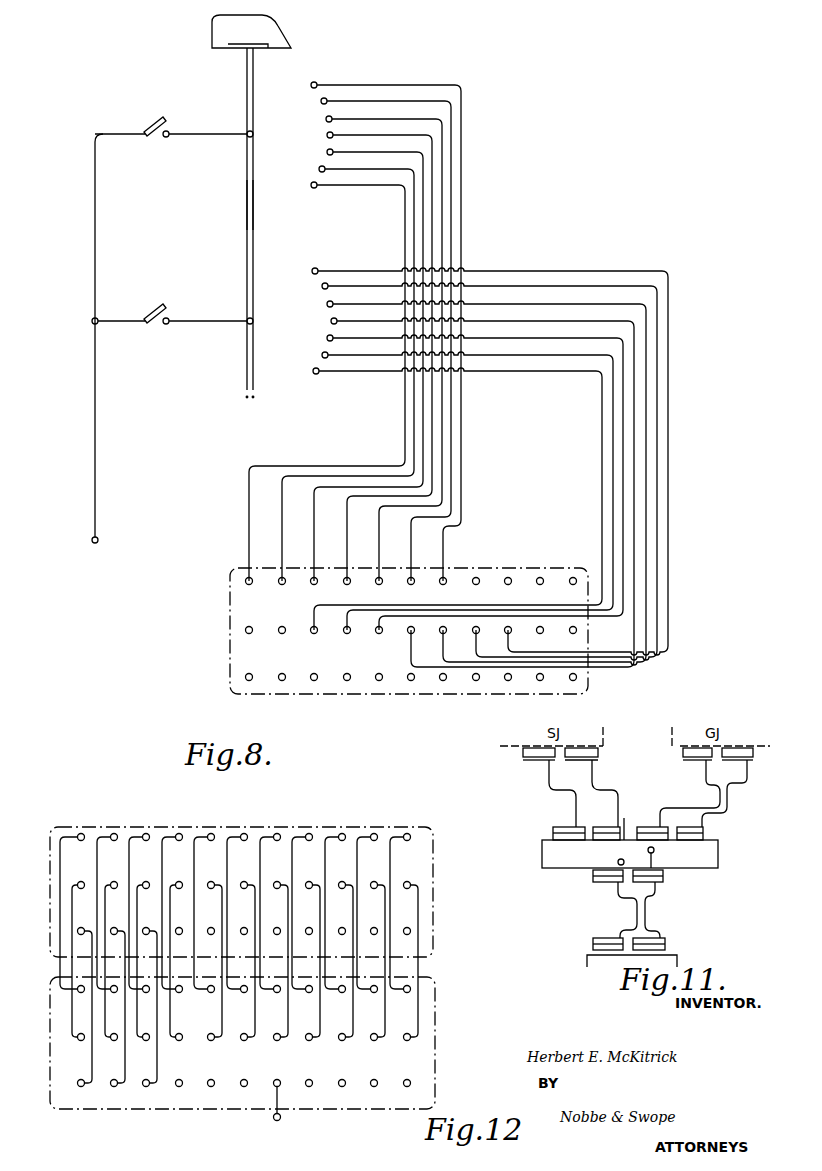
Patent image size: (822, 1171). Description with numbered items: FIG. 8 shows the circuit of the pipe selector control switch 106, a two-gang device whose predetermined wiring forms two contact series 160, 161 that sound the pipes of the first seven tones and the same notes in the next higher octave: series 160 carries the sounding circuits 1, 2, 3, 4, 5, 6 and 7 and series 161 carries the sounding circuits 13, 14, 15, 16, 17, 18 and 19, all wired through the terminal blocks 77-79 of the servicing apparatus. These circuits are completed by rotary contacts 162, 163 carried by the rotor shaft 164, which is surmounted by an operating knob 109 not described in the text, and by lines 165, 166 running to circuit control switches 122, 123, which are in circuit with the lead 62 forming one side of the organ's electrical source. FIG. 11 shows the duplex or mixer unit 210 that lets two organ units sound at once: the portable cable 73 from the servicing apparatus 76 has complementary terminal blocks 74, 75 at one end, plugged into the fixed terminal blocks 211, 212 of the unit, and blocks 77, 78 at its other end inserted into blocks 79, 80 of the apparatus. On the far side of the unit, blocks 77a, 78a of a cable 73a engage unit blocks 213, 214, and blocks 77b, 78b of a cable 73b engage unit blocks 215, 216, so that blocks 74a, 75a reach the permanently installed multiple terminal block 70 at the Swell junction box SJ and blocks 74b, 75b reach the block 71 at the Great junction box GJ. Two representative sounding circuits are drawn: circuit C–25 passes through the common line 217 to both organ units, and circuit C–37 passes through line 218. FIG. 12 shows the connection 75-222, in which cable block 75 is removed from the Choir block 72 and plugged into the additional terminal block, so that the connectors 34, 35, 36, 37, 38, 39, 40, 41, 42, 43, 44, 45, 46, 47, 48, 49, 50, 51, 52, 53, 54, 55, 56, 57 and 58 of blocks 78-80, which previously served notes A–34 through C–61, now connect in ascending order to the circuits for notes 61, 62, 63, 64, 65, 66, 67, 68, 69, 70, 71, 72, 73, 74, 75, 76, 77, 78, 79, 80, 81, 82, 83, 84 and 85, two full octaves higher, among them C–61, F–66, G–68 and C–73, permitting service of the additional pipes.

In FIG. 8, the knob 109 is at (222, 32).
In FIG. 8, the pipe selector control switch 106 is at (224, 109).
In FIG. 8, the rotor shaft 164 is at (247, 197).
In FIG. 8, the circuit control switch 122 is at (132, 117).
In FIG. 8, the circuit control switch 123 is at (133, 300).
In FIG. 8, the line 165 is at (197, 137).
In FIG. 8, the line 166 is at (200, 323).
In FIG. 8, the lead 62 is at (97, 246).
In FIG. 12, the lead 62 is at (193, 977).
In FIG. 8, the rotary contact 162 is at (300, 72).
In FIG. 8, the rotary contact 163 is at (300, 258).
In FIG. 8, the contact series 160 is at (303, 161).
In FIG. 8, the contact series 161 is at (303, 337).
In FIG. 8, the sounding circuit for note C– 1 is at (326, 385).
In FIG. 8, the sounding circuit for note C#– 2 is at (346, 377).
In FIG. 8, the sounding circuit for note D– 3 is at (366, 369).
In FIG. 8, the sounding circuit for note D#– 4 is at (379, 360).
In FIG. 8, the sounding circuit for note E– 5 is at (384, 352).
In FIG. 8, the sounding circuit for note F– 6 is at (386, 343).
In FIG. 8, the sounding circuit for note F#– 7 is at (386, 336).
In FIG. 8, the sounding circuit for note C– 13 is at (602, 478).
In FIG. 8, the sounding circuit for note C#– 14 is at (613, 496).
In FIG. 8, the sounding circuit for note D– 15 is at (623, 514).
In FIG. 8, the sounding circuit for note D#– 16 is at (686, 486).
In FIG. 8, the sounding circuit for note E– 17 is at (686, 508).
In FIG. 8, the sounding circuit for note F– 18 is at (686, 530).
In FIG. 8, the sounding circuit for note F#– 19 is at (686, 554).
In FIG. 8, the terminal blocks 77 and 79 77-79 is at (230, 628).
In FIG. 11, the multiple terminal block 70 is at (525, 752).
In FIG. 12, the multiple terminal block 70 is at (370, 912).
In FIG. 11, the multiple terminal block 71 is at (683, 752).
In FIG. 12, the multiple terminal block 71 is at (403, 912).
In FIG. 11, the terminal block 74a is at (527, 760).
In FIG. 11, the terminal block 75a is at (596, 757).
In FIG. 11, the terminal block 74b is at (690, 760).
In FIG. 11, the terminal block 75b is at (753, 760).
In FIG. 11, the sounding circuit for note C– 37 is at (592, 772).
In FIG. 12, the sounding circuit for note C– 37 is at (179, 1000).
In FIG. 11, the sounding circuit for note C– 25 is at (576, 797).
In FIG. 11, the cable 73a is at (550, 787).
In FIG. 11, the cable 73b is at (743, 787).
In FIG. 11, the terminal block 77a is at (553, 828).
In FIG. 11, the terminal block 78a is at (608, 827).
In FIG. 11, the terminal block 77b is at (666, 824).
In FIG. 11, the terminal block 78b is at (707, 828).
In FIG. 11, the terminal block 213 is at (553, 836).
In FIG. 11, the terminal block 214 is at (624, 822).
In FIG. 11, the terminal block 215 is at (650, 832).
In FIG. 11, the terminal block 216 is at (703, 837).
In FIG. 11, the common line 217 is at (582, 856).
In FIG. 11, the line 218 is at (727, 857).
In FIG. 11, the duplex or mixer unit 210 is at (544, 862).
In FIG. 11, the fixed terminal block 211 is at (594, 872).
In FIG. 11, the fixed terminal block 212 is at (667, 872).
In FIG. 11, the terminal block 74 is at (592, 893).
In FIG. 12, the terminal block 74 is at (146, 960).
In FIG. 11, the terminal block 75 is at (669, 893).
In FIG. 12, the terminal block 75 is at (179, 960).
In FIG. 11, the portable cable 73 is at (630, 904).
In FIG. 12, the portable cable 73 is at (114, 960).
In FIG. 11, the terminal block 77 is at (598, 937).
In FIG. 12, the terminal block 77 is at (245, 960).
In FIG. 11, the terminal block 78 is at (667, 934).
In FIG. 12, the terminal block 78 is at (278, 960).
In FIG. 11, the terminal block 79 is at (593, 946).
In FIG. 12, the terminal block 79 is at (310, 960).
In FIG. 11, the terminal block 80 is at (667, 948).
In FIG. 12, the terminal block 80 is at (343, 960).
In FIG. 11, the servicing apparatus 76 is at (610, 970).
In FIG. 12, the servicing apparatus 76 is at (212, 960).
In FIG. 12, the block 75 plugged into additional terminal block 222 75-222 is at (433, 925).
In FIG. 12, the terminal blocks 78 and 80 78-80 is at (433, 1022).
In FIG. 12, the note circuit C– 61 is at (75, 912).
In FIG. 12, the note circuit D– 63 is at (142, 912).
In FIG. 12, the note circuit D#– 64 is at (175, 912).
In FIG. 12, the note circuit E– 65 is at (207, 912).
In FIG. 12, the note circuit F– 66 is at (240, 912).
In FIG. 12, the note circuit F#– 67 is at (273, 912).
In FIG. 12, the note circuit G– 68 is at (305, 912).
In FIG. 12, the note circuit G#– 69 is at (338, 912).
In FIG. 12, the multiple terminal block 72 is at (81, 960).
In FIG. 12, the note circuit G#– 81 is at (375, 960).
In FIG. 12, the note circuit A– 82 is at (408, 960).
In FIG. 12, the note circuit A#– 83 is at (82, 1006).
In FIG. 12, the note circuit B– 84 is at (115, 1006).
In FIG. 12, the note circuit C– 85 is at (147, 1006).
In FIG. 12, the connector for note A– 34 is at (81, 1000).
In FIG. 12, the connector for note A#– 35 is at (114, 1000).
In FIG. 12, the connector for note B– 36 is at (146, 1000).
In FIG. 12, the connector for note C#– 38 is at (211, 1000).
In FIG. 12, the connector for note D– 39 is at (244, 1000).
In FIG. 12, the connector for note D#– 40 is at (277, 1000).
In FIG. 12, the connector for note E– 41 is at (309, 1000).
In FIG. 12, the connector for note F– 42 is at (342, 1000).
In FIG. 12, the connector for note F#– 43 is at (374, 1000).
In FIG. 12, the connector for note G– 44 is at (407, 1000).
In FIG. 12, the connector for note G#– 45 is at (81, 1048).
In FIG. 12, the connector for note A– 46 is at (114, 1048).
In FIG. 12, the connector for note A#– 47 is at (146, 1048).
In FIG. 12, the connector for note B– 48 is at (179, 1048).
In FIG. 12, the connector for note C– 49 is at (211, 1048).
In FIG. 12, the connector for note C#– 50 is at (244, 1048).
In FIG. 12, the connector for note D– 51 is at (277, 1048).
In FIG. 12, the connector for note D#– 52 is at (309, 1048).
In FIG. 12, the connector for note E– 53 is at (342, 1048).
In FIG. 12, the connector for note F– 54 is at (374, 1048).
In FIG. 12, the connector for note F#– 55 is at (407, 1048).
In FIG. 12, the connector for note G– 56 is at (81, 1094).
In FIG. 12, the connector for note G#– 57 is at (114, 1094).
In FIG. 12, the connector for note A– 58 is at (146, 1094).